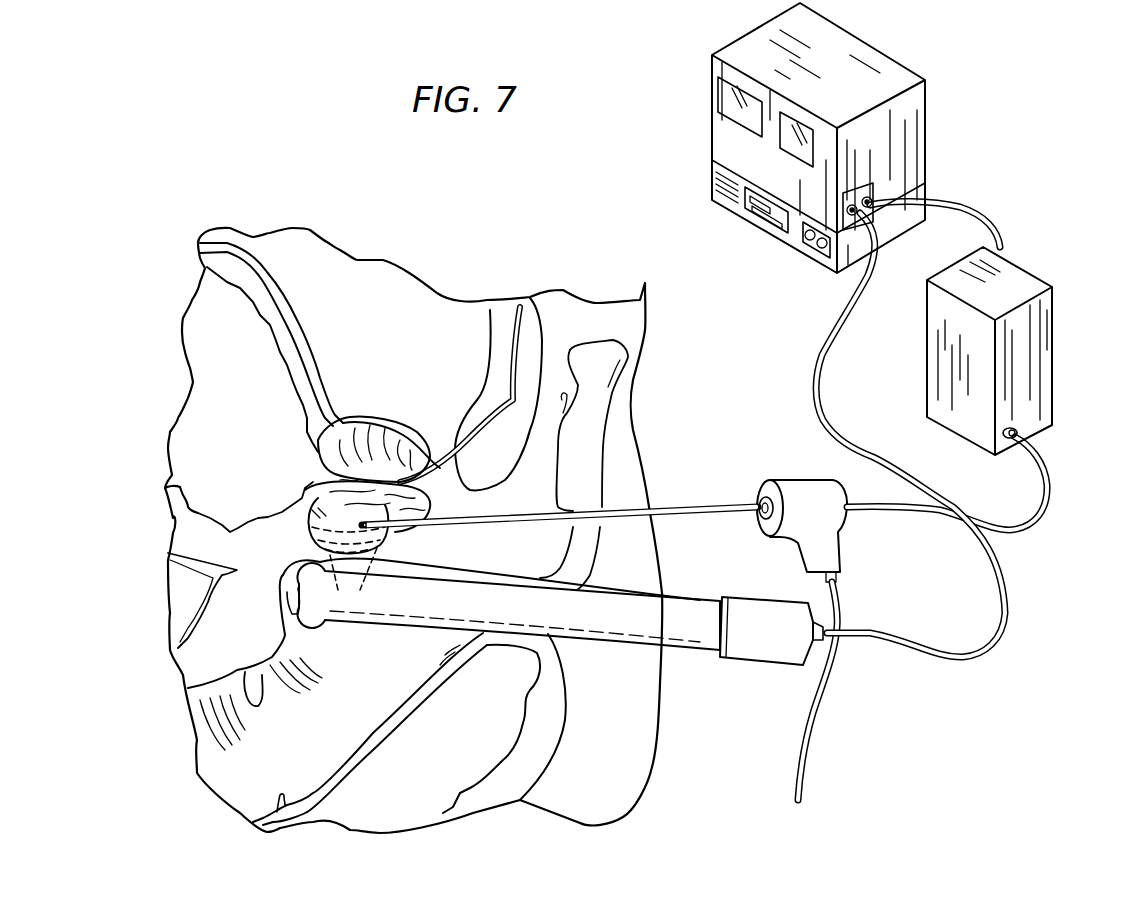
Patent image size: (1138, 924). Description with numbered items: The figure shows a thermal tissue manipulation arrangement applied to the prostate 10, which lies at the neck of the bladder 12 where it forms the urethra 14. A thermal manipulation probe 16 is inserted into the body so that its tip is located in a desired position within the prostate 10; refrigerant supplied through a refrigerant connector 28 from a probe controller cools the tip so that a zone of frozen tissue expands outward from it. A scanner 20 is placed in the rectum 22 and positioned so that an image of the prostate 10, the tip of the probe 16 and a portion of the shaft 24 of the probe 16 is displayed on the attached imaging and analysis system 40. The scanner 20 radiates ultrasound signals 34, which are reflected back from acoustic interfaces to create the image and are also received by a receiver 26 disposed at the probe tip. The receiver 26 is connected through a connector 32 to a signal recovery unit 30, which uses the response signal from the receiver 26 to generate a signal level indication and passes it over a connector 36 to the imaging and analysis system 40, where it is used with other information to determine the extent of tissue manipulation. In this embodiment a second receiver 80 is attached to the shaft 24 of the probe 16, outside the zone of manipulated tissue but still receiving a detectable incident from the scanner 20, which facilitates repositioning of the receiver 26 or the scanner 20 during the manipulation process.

The prostate 10 is at (305, 533).
The bladder 12 is at (250, 372).
The urethra 14 is at (507, 363).
The thermal manipulation probe 16 is at (660, 418).
The scanner 20 is at (688, 657).
The rectum 22 is at (375, 688).
The shaft 24 is at (700, 500).
The receiver 26 is at (308, 487).
The refrigerant connector 28 is at (818, 710).
The signal recovery unit 30 is at (921, 370).
The connector 32 is at (1047, 520).
The ultrasound signals 34 is at (331, 521).
The connector 36 is at (983, 204).
The imaging and analysis system 40 is at (702, 123).
The second receiver 80 is at (428, 522).